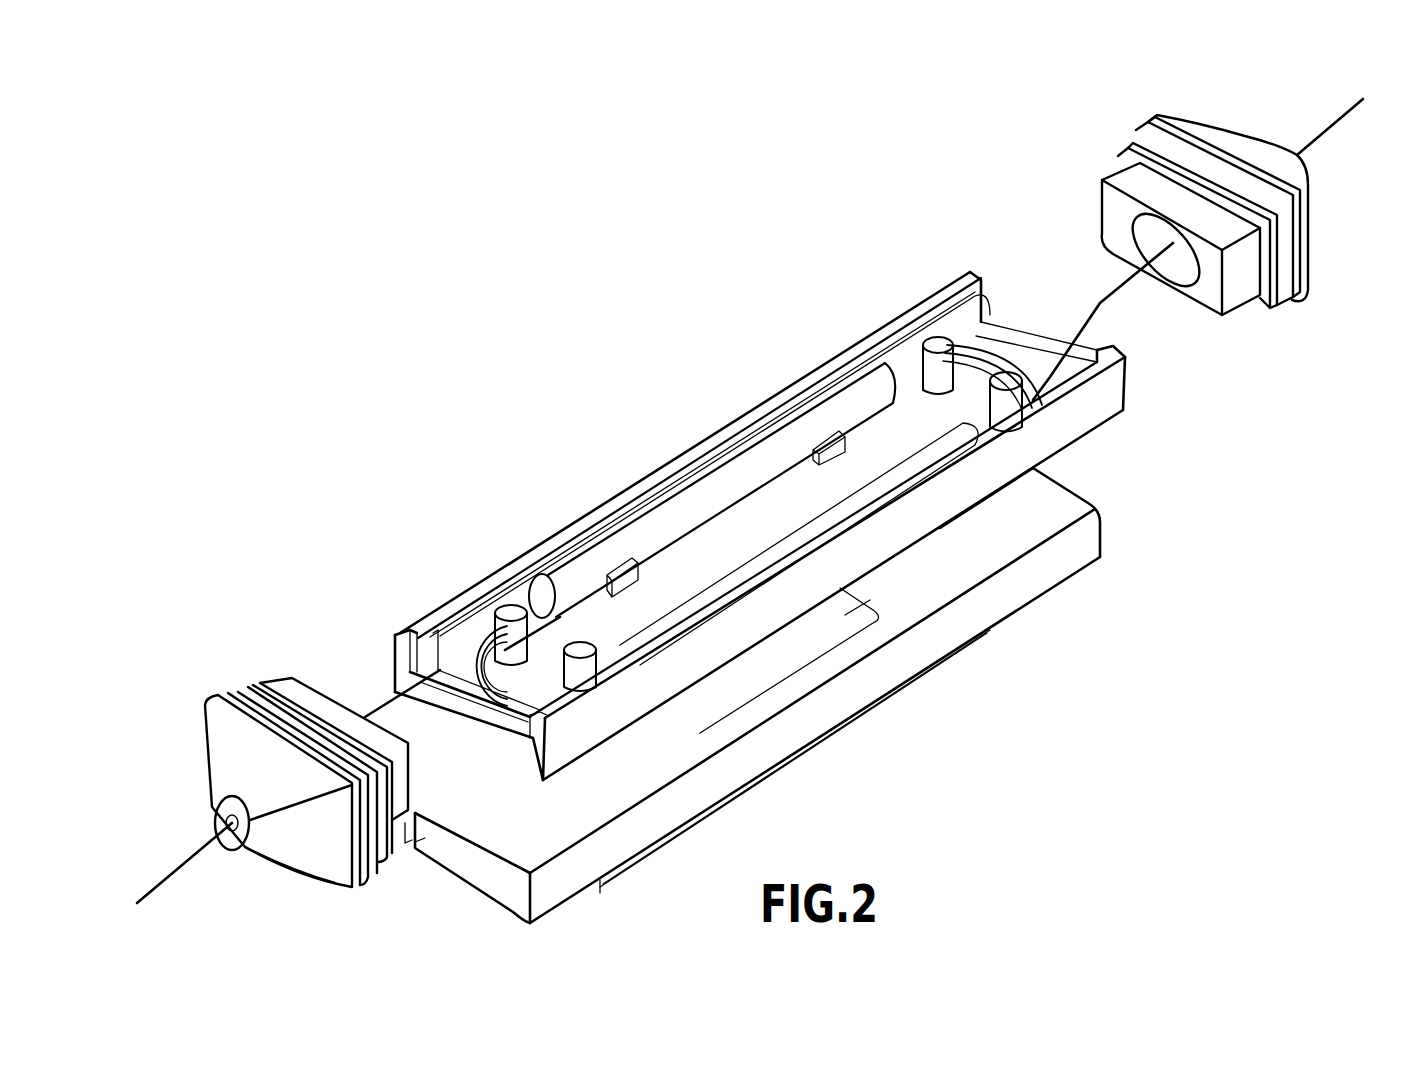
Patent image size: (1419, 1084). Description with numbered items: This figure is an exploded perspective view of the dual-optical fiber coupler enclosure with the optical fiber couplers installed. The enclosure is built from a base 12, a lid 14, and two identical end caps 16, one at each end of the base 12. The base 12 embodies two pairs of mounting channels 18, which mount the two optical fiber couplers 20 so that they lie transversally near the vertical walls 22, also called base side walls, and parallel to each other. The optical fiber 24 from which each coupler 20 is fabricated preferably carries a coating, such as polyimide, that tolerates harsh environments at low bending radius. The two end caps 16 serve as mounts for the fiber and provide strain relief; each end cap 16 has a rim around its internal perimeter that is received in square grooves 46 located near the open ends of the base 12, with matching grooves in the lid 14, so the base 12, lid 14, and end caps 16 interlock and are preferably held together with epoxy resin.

The base 12 is at (772, 509).
The lid 14 is at (1055, 508).
The end cap 16 is at (228, 742).
The mounting channel 18 is at (630, 575).
The optical fiber coupler 20 is at (707, 495).
The vertical wall 22 is at (907, 353).
The optical fiber 24 is at (893, 370).
The square groove 46 is at (1005, 347).